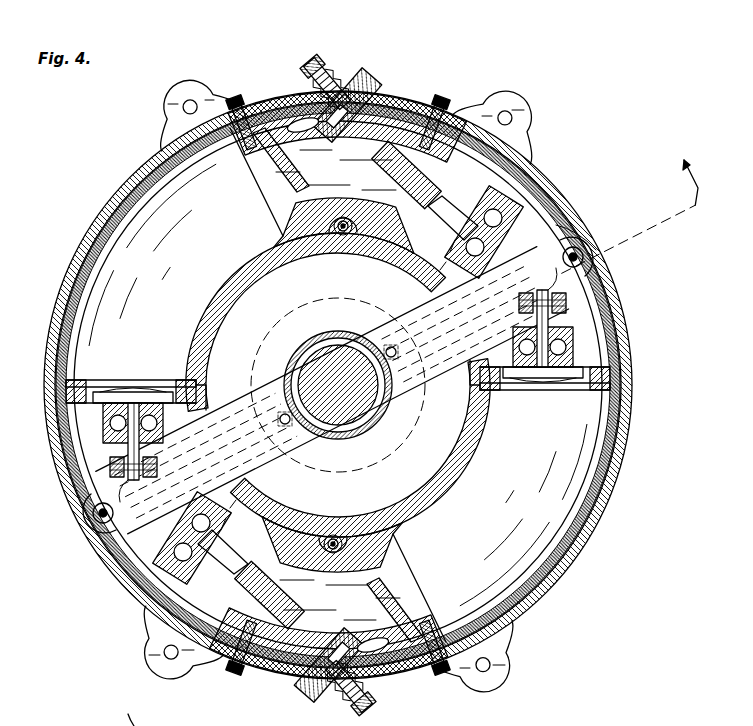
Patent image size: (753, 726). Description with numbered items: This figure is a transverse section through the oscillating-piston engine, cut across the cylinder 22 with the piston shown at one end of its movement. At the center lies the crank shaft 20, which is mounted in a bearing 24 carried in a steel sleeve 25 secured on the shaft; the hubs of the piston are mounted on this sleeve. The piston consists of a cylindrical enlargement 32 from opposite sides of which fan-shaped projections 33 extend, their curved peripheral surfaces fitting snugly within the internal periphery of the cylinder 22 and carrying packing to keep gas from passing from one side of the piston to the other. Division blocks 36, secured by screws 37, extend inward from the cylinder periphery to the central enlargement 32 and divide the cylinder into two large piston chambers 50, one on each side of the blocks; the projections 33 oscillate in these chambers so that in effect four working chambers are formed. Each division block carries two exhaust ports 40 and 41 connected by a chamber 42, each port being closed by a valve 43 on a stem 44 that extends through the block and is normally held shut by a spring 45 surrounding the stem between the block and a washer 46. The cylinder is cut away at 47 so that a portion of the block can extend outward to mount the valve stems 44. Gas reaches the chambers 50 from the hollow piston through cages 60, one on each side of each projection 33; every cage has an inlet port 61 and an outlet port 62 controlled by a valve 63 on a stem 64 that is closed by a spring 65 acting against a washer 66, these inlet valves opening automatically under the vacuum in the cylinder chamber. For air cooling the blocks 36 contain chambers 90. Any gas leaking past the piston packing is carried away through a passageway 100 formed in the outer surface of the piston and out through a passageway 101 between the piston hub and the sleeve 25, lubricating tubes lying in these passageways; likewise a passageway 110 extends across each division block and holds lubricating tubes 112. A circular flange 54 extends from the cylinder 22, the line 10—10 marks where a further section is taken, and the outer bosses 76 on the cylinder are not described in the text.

The radial engine assembly 10 is at (630, 202).
The shaft 20 is at (362, 422).
The cylinder 22 is at (622, 492).
The bearing 24 is at (336, 436).
The steel sleeve 25 is at (380, 418).
The cylindrical enlargement 32 is at (224, 292).
The fan-shaped projections 33 is at (84, 392).
The division blocks 36 is at (252, 150).
The screws 37 is at (256, 94).
The exhaust port 40 is at (281, 172).
The exhaust port 41 is at (405, 182).
The chamber 42 is at (338, 385).
The valve 43 is at (430, 206).
The stem 44 is at (316, 50).
The spring 45 is at (336, 62).
The washer 46 is at (298, 66).
The cut away portion 47 is at (376, 98).
The piston chambers 50 is at (338, 384).
The circular flange 54 is at (119, 715).
The cages 60 is at (618, 333).
The inlet port 61 is at (512, 350).
The outlet port 62 is at (500, 388).
The valve 63 is at (541, 382).
The stem 64 is at (586, 244).
The spring 65 is at (570, 300).
The washer 66 is at (576, 246).
The mounting lug 76 is at (178, 100).
The chambers 90 is at (302, 118).
The passageway 100 is at (590, 268).
The passageway 101 is at (387, 345).
The passageway 110 is at (334, 238).
The lubricating tubes 112 is at (345, 236).